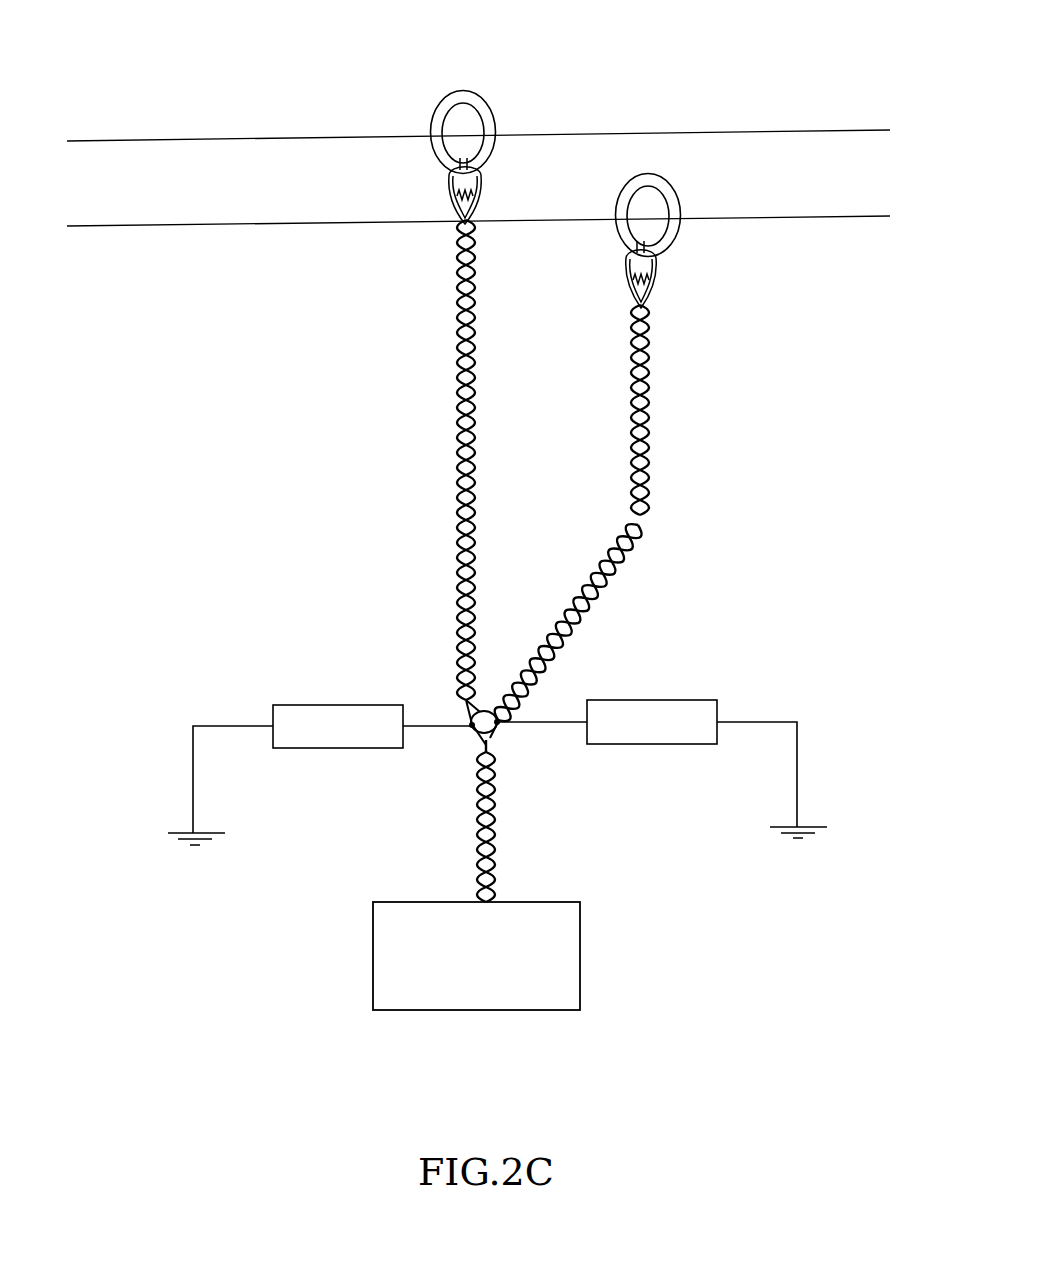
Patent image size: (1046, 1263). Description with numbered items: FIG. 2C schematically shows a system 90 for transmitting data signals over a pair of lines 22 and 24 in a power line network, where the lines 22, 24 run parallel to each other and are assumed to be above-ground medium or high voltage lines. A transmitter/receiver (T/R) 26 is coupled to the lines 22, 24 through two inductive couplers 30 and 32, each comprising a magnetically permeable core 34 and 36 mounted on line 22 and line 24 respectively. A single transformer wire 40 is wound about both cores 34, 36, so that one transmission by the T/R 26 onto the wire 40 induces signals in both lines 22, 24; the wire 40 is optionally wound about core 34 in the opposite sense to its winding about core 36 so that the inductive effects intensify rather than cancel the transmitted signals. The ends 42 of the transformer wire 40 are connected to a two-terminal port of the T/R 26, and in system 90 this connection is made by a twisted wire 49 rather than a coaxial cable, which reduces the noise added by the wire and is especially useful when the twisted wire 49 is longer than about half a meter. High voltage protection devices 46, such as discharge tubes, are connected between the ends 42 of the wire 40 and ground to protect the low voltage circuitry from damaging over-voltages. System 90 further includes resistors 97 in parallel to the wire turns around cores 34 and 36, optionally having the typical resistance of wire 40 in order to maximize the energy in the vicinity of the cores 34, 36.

The line 22 is at (107, 140).
The line 24 is at (110, 224).
The transmitter/receiver (T/R) 26 is at (582, 955).
The inductive coupler 30 is at (403, 100).
The inductive coupler 32 is at (605, 170).
The core 34 is at (446, 170).
The core 36 is at (668, 183).
The transformer wire 40 is at (478, 388).
The ends of transformer wire 42 is at (482, 736).
The high voltage protection device 46 is at (320, 704).
The twisted wire 49 is at (495, 810).
The system 90 is at (247, 451).
The resistor 97 is at (455, 226).